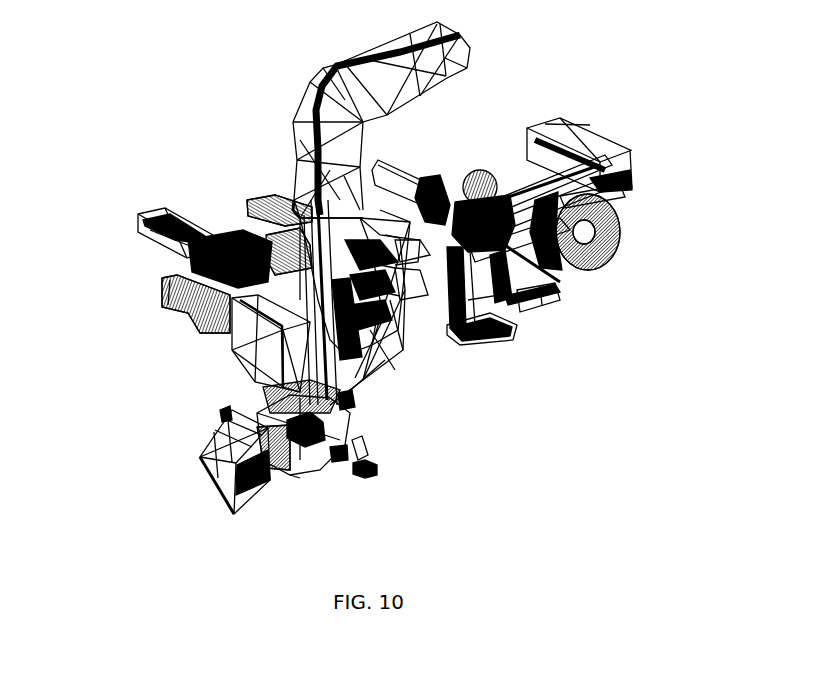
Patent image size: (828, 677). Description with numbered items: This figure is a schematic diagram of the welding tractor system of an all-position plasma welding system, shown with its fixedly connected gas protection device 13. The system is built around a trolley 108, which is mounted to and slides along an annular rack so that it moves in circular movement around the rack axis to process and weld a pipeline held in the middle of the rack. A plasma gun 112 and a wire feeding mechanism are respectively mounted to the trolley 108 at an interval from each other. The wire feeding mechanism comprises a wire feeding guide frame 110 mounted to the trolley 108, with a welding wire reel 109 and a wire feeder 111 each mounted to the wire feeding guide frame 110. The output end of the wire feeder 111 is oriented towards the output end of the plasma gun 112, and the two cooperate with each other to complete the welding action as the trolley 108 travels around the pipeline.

The gas protection device 13 is at (227, 457).
The trolley 108 is at (507, 258).
The welding wire reel 109 is at (606, 195).
The wire feeding guide frame 110 is at (560, 282).
The wire feeder 111 is at (375, 468).
The plasma gun 112 is at (310, 462).